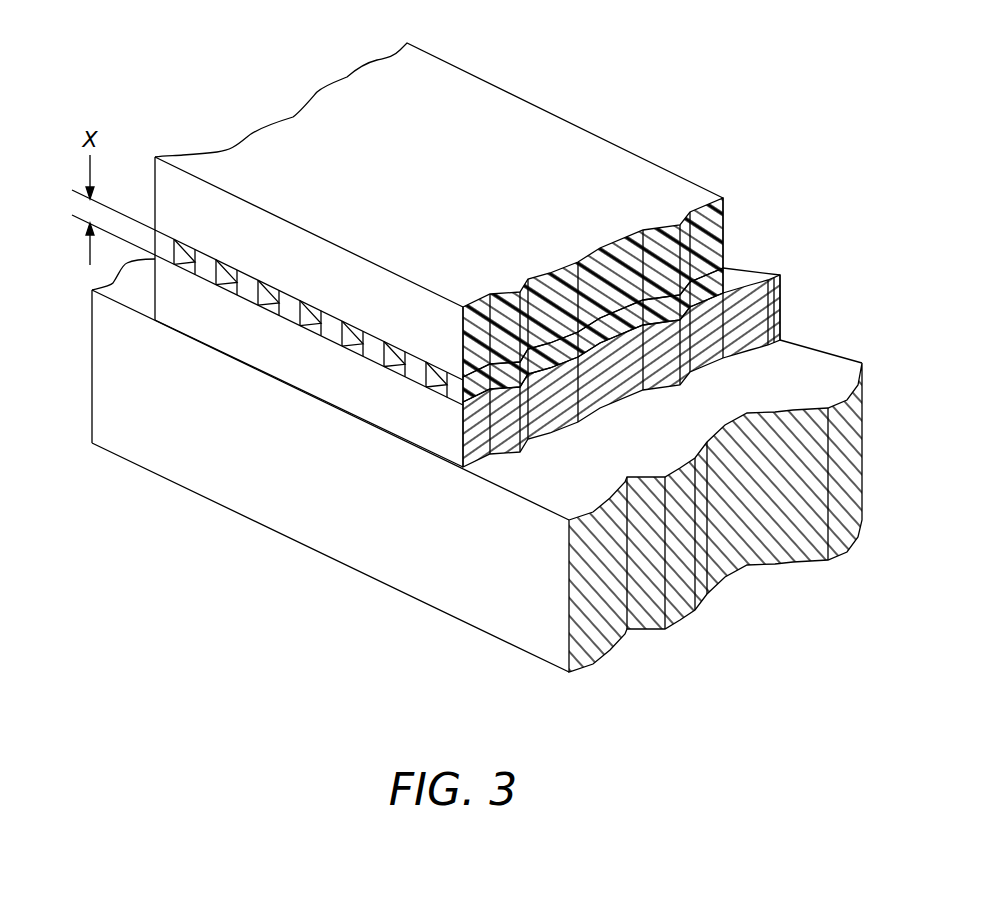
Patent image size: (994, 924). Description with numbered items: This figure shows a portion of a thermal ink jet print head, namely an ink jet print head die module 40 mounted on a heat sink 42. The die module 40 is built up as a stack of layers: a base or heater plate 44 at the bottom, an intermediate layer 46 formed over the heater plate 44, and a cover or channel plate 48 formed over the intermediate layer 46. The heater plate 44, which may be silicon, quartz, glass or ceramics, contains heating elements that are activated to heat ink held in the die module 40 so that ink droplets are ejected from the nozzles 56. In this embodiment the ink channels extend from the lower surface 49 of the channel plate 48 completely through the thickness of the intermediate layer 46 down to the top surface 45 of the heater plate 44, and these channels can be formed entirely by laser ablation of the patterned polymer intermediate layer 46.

The ink jet print head die module 40 is at (574, 89).
The heat sink 42 is at (100, 362).
The heater plate 44 is at (780, 297).
The top surface 45 is at (313, 325).
The intermediate layer 46 is at (448, 393).
The channel plate 48 is at (642, 168).
The lower surface 49 is at (229, 264).
The nozzles 56 is at (347, 325).